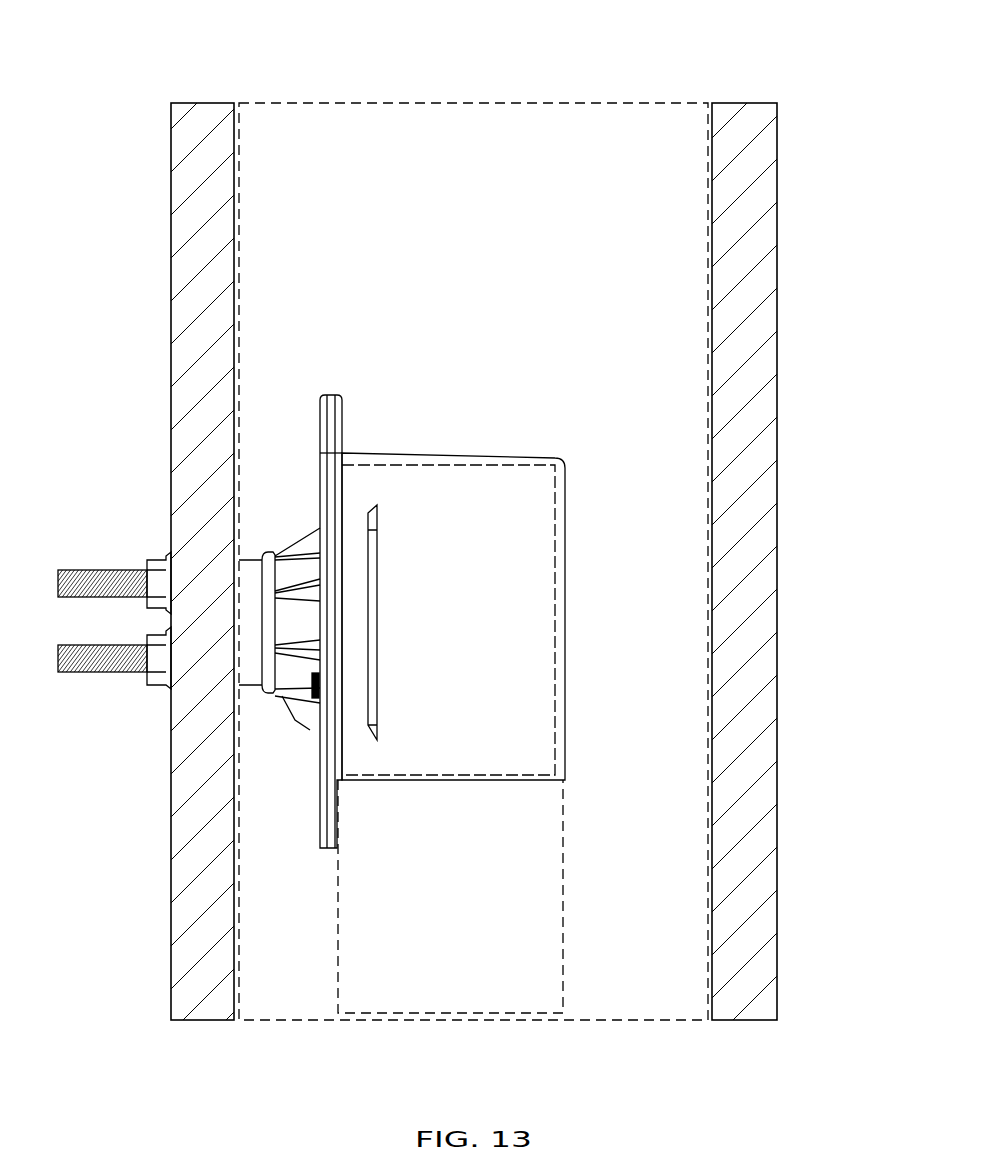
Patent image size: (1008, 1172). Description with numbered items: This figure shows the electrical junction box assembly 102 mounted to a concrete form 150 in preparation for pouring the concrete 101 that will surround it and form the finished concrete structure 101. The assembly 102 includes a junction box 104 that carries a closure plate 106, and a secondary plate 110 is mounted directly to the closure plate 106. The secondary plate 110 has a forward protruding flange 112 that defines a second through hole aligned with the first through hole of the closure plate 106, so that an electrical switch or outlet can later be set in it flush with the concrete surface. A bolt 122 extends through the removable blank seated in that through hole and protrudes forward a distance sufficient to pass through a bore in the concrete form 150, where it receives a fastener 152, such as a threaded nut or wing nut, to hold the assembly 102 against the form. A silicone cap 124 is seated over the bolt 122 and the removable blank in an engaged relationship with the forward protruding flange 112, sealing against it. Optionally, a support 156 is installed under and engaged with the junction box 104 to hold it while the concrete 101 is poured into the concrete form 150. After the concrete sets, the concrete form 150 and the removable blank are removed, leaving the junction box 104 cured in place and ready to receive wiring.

The concrete structure 101 is at (487, 102).
The electrical junction box assembly 102 is at (468, 343).
The junction box 104 is at (515, 480).
The closure plate 106 is at (345, 410).
The secondary plate 110 is at (320, 450).
The forward protruding flange 112 is at (292, 700).
The bolt 122 is at (75, 572).
The silicone cap 124 is at (248, 665).
The concrete form 150 is at (190, 337).
The fastener 152 is at (155, 560).
The support 156 is at (530, 985).